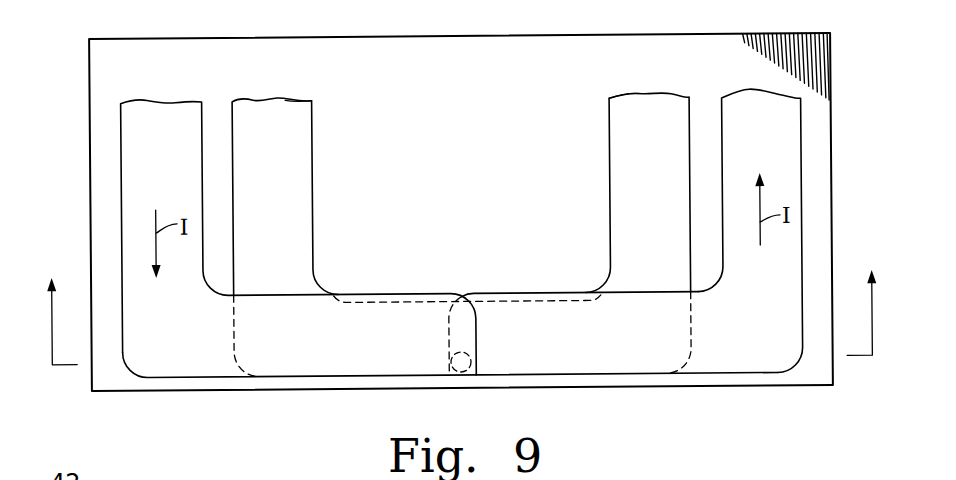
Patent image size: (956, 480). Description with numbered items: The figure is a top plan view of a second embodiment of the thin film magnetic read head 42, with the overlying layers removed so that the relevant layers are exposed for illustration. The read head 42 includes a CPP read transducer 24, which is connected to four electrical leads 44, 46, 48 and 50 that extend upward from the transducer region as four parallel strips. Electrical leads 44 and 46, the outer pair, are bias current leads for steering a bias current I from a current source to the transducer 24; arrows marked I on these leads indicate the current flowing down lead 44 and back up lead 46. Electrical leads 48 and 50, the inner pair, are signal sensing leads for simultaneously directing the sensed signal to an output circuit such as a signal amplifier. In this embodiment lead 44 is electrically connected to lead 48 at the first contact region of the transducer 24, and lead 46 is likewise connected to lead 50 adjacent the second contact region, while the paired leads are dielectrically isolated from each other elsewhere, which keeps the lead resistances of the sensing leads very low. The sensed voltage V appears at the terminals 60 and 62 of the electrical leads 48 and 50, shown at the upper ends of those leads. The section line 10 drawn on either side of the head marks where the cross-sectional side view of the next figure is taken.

The magnetic read head 42 is at (52, 48).
The electrical lead 44 is at (181, 165).
The electrical lead 46 is at (774, 153).
The electrical lead 48 is at (287, 166).
The electrical lead 50 is at (664, 168).
The terminal 60 is at (292, 98).
The terminal 62 is at (634, 96).
The CPP read transducer 24 is at (486, 349).
The line 10— 10 is at (463, 296).